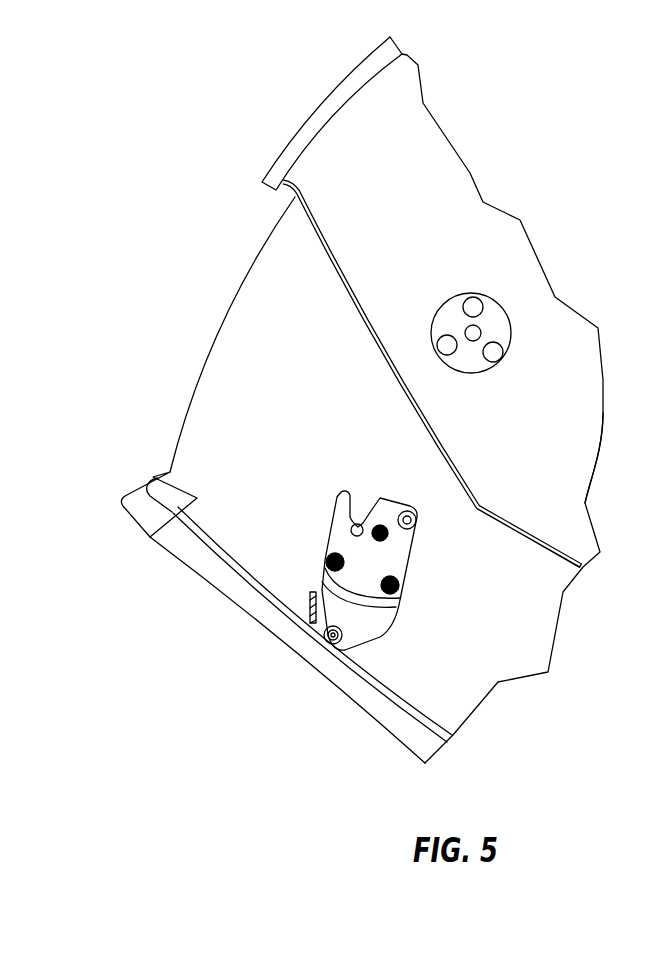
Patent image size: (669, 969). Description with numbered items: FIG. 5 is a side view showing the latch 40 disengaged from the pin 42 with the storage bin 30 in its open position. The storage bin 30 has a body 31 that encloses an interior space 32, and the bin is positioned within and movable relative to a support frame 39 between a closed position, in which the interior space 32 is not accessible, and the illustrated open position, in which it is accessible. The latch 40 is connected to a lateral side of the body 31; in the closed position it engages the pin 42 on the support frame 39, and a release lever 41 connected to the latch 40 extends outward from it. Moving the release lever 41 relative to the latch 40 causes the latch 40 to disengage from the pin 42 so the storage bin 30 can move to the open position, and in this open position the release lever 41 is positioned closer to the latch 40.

The storage bin 30 is at (180, 428).
The body 31 is at (242, 540).
The interior space 32 is at (241, 265).
The support frame 39 is at (575, 372).
The latch 40 is at (398, 562).
The release lever 41 is at (312, 597).
The pin 42 is at (473, 333).